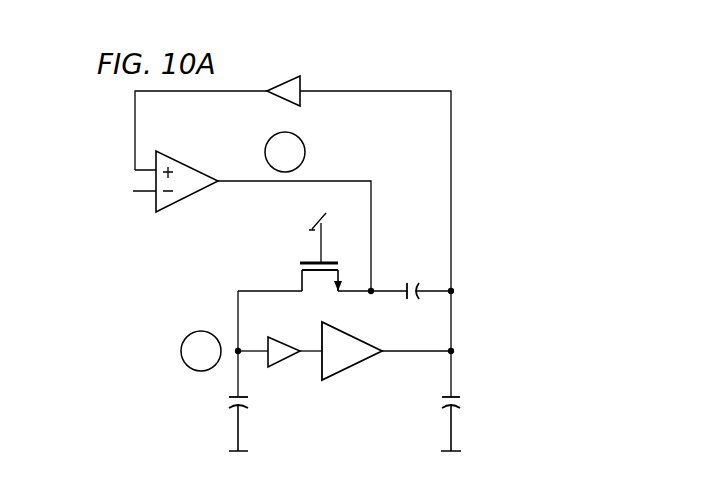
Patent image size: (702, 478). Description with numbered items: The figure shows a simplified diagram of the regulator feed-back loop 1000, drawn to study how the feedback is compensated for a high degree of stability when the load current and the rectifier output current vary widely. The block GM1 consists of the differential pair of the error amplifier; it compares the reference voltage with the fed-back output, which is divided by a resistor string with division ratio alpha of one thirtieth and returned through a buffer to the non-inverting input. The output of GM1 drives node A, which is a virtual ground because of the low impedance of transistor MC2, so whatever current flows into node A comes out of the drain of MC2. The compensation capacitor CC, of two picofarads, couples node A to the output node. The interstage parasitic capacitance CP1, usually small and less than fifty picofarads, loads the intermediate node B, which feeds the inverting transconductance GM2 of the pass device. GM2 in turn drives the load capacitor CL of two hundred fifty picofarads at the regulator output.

The regulator feed-back loop 1000 is at (372, 62).
The transconductance block gm1 GM1 is at (180, 179).
The transistor MC2 is at (297, 252).
The compensation capacitor CC is at (425, 278).
The interstage parasitic capacitance CP1 is at (218, 421).
The transconductance of pass device GM2 is at (357, 349).
The load capacitor CL is at (465, 421).